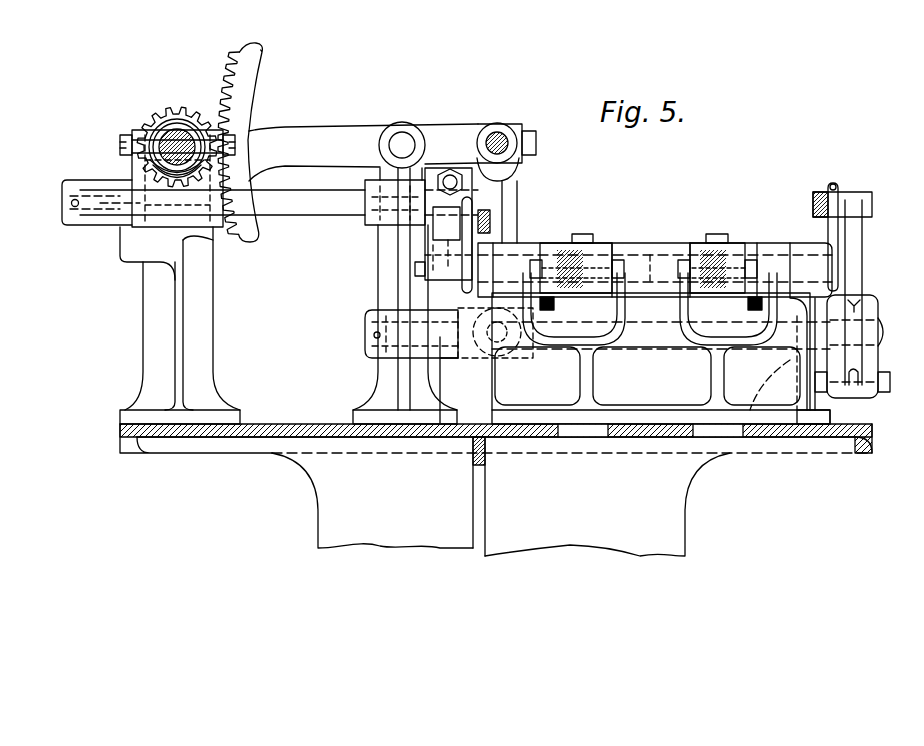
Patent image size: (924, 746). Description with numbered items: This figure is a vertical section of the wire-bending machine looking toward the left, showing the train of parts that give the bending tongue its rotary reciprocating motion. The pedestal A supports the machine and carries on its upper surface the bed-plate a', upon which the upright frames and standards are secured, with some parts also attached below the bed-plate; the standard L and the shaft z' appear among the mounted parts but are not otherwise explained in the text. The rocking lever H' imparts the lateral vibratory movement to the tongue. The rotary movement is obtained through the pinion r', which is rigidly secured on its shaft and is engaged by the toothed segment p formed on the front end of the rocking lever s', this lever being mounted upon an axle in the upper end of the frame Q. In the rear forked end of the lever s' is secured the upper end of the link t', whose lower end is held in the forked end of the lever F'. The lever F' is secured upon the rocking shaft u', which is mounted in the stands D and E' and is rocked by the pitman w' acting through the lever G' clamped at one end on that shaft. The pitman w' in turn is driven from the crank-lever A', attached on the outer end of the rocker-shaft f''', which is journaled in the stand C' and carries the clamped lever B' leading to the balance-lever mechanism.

The pedestal A is at (496, 490).
The bed-plate a' is at (312, 408).
The pedestal L is at (180, 325).
The shaft z' is at (270, 202).
The lever H' is at (177, 178).
The pinion r' is at (177, 136).
The toothed segment p is at (242, 86).
The rocking lever s' is at (391, 145).
The frame Q is at (405, 296).
The stand E' is at (411, 334).
The lever F' is at (486, 365).
The crank-lever A' is at (646, 208).
The link t' is at (515, 225).
The rocking shaft f''' is at (655, 254).
The lever B' is at (650, 260).
The rocking shaft u' is at (650, 309).
The stand C' is at (661, 358).
The grooved feed-roller D is at (810, 361).
The pitman w' is at (873, 292).
The lever G' is at (863, 336).